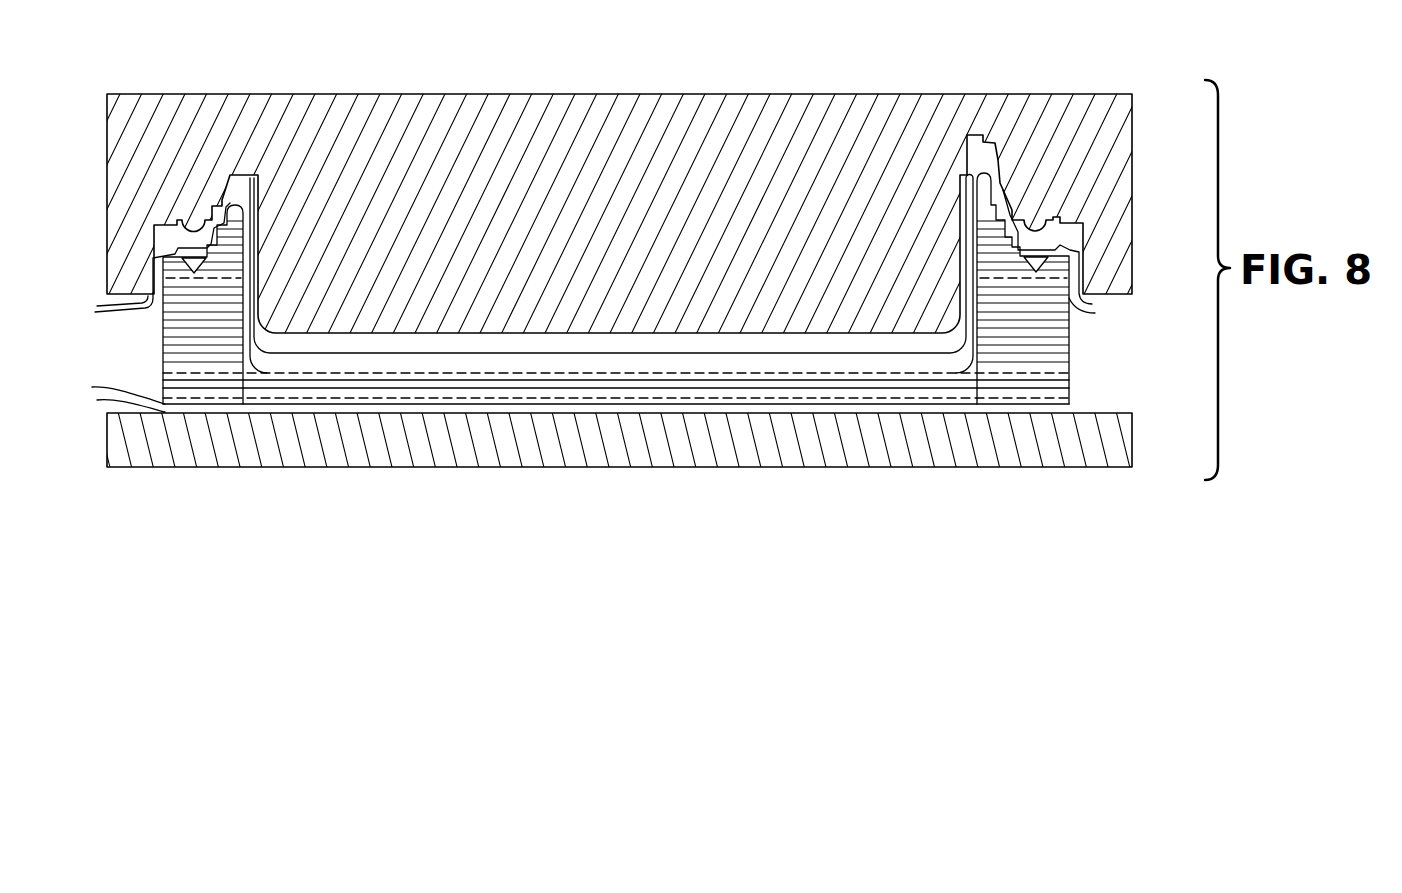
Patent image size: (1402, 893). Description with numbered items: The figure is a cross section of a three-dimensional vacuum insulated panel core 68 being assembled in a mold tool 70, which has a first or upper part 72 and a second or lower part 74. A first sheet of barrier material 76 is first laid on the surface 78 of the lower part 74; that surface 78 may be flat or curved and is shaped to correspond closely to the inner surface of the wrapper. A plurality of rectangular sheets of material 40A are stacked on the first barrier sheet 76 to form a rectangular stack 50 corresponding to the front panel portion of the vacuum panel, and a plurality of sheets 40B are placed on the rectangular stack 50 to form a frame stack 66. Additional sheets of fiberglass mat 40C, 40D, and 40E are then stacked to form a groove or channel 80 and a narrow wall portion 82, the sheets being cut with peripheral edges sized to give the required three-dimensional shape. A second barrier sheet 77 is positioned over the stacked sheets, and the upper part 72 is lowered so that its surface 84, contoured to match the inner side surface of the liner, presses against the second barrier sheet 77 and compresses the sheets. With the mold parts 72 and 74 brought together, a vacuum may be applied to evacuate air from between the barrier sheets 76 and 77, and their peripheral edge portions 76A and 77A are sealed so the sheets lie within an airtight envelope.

The mold tool 70 is at (1043, 90).
The first or upper part 72 is at (1132, 104).
The second or lower part 74 is at (1133, 423).
The first sheet of barrier material 76 is at (126, 394).
The peripheral edge portion 76A is at (100, 392).
The second barrier sheet 77 is at (123, 310).
The peripheral edge portion 77A is at (103, 305).
The surface 78 is at (100, 400).
The groove or channel 80 is at (1052, 253).
The narrow wall portion 82 is at (1003, 200).
The surface 84 is at (248, 176).
The rectangular stack 50 is at (165, 356).
The rectangular sheets of material 40A is at (1069, 388).
The sheets 40B is at (1095, 313).
The sheets of fiberglass mat 40C is at (1063, 253).
The sheets of fiberglass mat 40D is at (1024, 250).
The sheets of fiberglass mat 40E is at (1010, 222).
The frame stack 66 is at (1092, 304).
The 3D vacuum insulated panel core 68 is at (1076, 338).